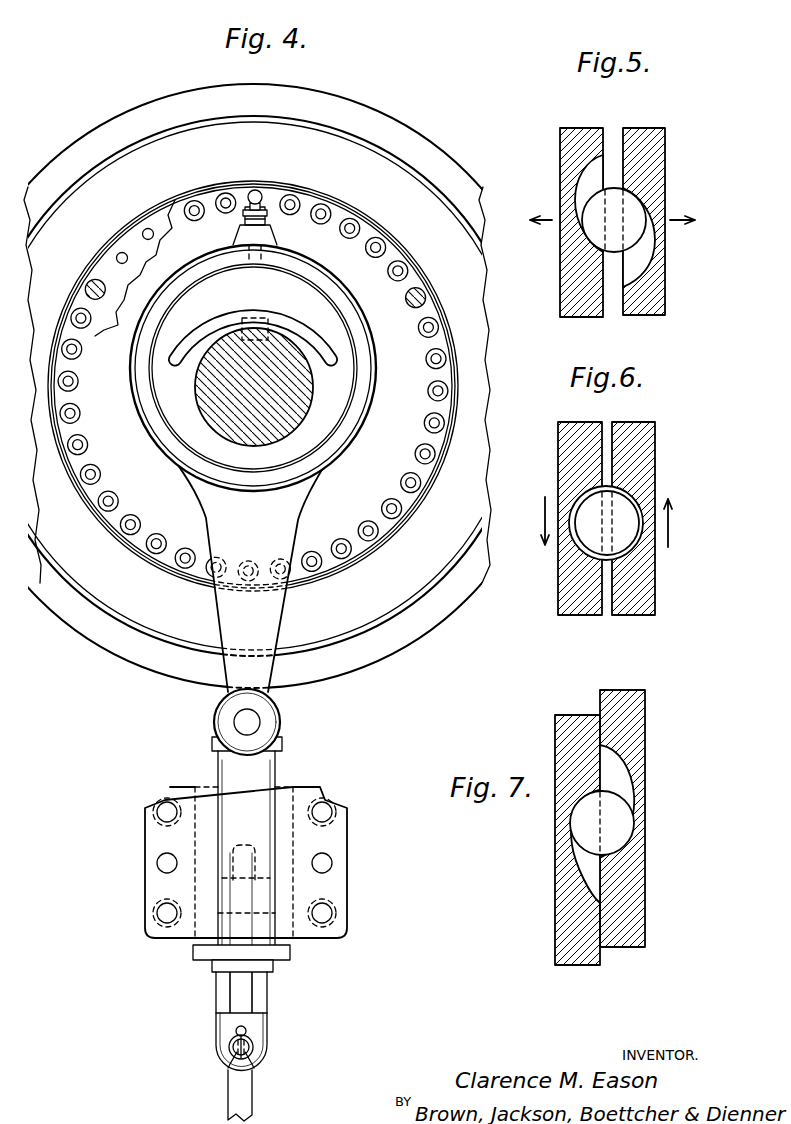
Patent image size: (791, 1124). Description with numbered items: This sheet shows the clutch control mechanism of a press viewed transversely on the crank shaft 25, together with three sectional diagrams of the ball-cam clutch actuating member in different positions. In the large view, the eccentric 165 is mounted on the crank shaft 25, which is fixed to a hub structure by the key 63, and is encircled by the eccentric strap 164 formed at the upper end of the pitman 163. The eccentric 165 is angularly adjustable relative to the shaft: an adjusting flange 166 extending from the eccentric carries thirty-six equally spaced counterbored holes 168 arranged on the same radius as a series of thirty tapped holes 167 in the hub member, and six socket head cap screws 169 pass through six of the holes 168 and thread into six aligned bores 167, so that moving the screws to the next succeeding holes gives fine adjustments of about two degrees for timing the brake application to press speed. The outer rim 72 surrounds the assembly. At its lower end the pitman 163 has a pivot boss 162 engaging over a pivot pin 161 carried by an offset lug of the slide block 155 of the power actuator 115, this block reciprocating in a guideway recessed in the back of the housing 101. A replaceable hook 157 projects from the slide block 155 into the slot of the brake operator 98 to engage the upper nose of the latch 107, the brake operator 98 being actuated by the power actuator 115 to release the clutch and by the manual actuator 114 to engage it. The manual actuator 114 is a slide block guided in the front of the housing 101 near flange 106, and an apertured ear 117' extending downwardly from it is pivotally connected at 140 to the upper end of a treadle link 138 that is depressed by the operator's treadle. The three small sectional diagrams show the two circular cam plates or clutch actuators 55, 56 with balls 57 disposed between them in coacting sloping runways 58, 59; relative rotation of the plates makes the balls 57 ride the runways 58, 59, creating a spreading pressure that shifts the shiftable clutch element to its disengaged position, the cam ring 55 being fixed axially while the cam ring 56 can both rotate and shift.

In FIG. 4, the flywheel rim 72 is at (137, 118).
In FIG. 4, the adjusting flange 166 is at (225, 200).
In FIG. 4, the tapped holes 167 is at (142, 230).
In FIG. 4, the counterbored holes 168 is at (372, 238).
In FIG. 4, the socket head cap screws 169 is at (89, 283).
In FIG. 4, the key 63 is at (255, 317).
In FIG. 4, the crank shaft 25 is at (280, 335).
In FIG. 4, the eccentric strap 164 is at (142, 368).
In FIG. 4, the eccentric 165 is at (336, 398).
In FIG. 4, the pitman 163 is at (215, 527).
In FIG. 4, the pivot boss 162 is at (228, 714).
In FIG. 4, the pivot pin 161 is at (254, 722).
In FIG. 4, the power actuator 115 is at (215, 760).
In FIG. 4, the housing 101 is at (190, 795).
In FIG. 4, the slide block 155 is at (265, 774).
In FIG. 4, the hook 157 is at (247, 850).
In FIG. 4, the brake operator 98 is at (218, 976).
In FIG. 4, the flange 106 is at (280, 957).
In FIG. 4, the latch 107 is at (238, 970).
In FIG. 4, the manual actuator 114 is at (264, 997).
In FIG. 4, the apertured ear 117' is at (265, 1042).
In FIG. 4, the pivot connection 140 is at (230, 1047).
In FIG. 4, the treadle link 138 is at (236, 1094).
In FIG. 5, the cam plate 55 is at (562, 140).
In FIG. 6, the cam plate 55 is at (570, 445).
In FIG. 7, the cam plate 55 is at (563, 742).
In FIG. 5, the cam plate 56 is at (660, 140).
In FIG. 6, the cam plate 56 is at (645, 447).
In FIG. 7, the cam plate 56 is at (637, 723).
In FIG. 5, the balls 57 is at (633, 217).
In FIG. 6, the balls 57 is at (588, 537).
In FIG. 7, the balls 57 is at (620, 827).
In FIG. 5, the runway 58 is at (582, 180).
In FIG. 6, the runway 58 is at (580, 493).
In FIG. 7, the runway 58 is at (578, 867).
In FIG. 5, the runway 59 is at (642, 260).
In FIG. 6, the runway 59 is at (632, 557).
In FIG. 7, the runway 59 is at (618, 778).